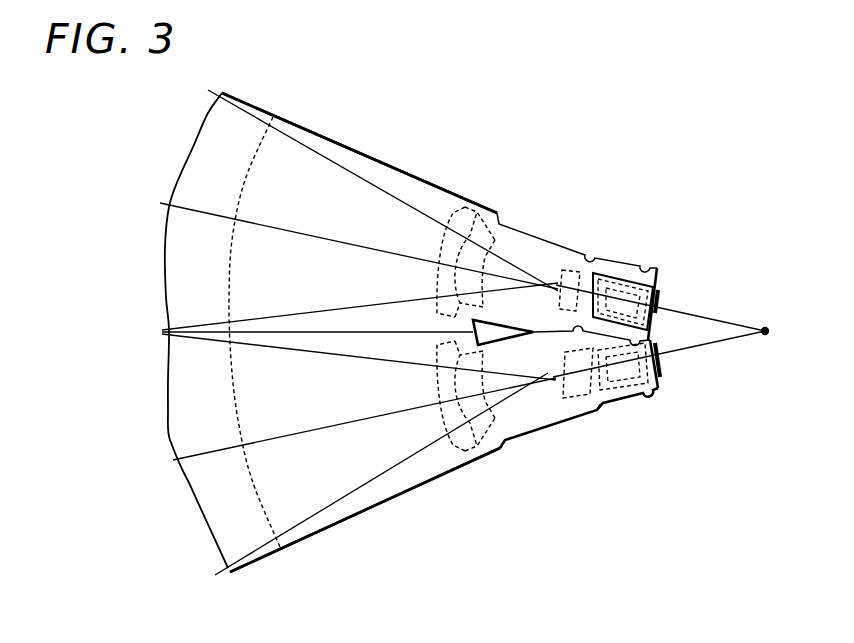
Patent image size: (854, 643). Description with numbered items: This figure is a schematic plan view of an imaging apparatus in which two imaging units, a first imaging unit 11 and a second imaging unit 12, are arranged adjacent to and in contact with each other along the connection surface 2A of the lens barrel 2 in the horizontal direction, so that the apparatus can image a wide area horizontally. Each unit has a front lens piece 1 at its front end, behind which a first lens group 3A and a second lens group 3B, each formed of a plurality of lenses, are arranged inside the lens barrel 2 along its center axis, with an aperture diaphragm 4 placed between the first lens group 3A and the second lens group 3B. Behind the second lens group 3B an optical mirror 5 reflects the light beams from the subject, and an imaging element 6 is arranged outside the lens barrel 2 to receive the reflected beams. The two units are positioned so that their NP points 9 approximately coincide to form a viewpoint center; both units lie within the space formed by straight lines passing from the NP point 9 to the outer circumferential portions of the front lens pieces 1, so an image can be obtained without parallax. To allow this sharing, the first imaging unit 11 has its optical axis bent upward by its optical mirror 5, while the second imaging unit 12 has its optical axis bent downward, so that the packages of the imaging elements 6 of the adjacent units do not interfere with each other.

The front lens piece 1 is at (188, 383).
The lens barrel 2 is at (333, 138).
The connection surface 2A is at (452, 189).
The first imaging unit 11 is at (382, 162).
The second imaging unit 12 is at (403, 497).
The first lens group 3A is at (487, 210).
The second lens group 3B is at (580, 413).
The aperture diaphragm 4 is at (547, 307).
The optical mirror 5 is at (657, 362).
The imaging element 6 is at (627, 273).
The NP point 9 is at (764, 326).